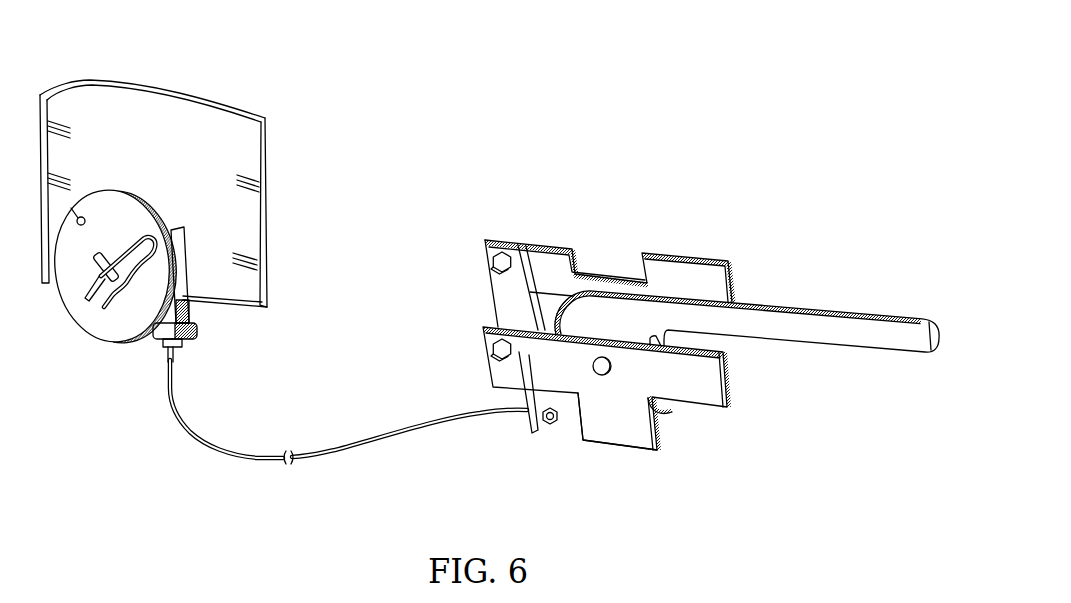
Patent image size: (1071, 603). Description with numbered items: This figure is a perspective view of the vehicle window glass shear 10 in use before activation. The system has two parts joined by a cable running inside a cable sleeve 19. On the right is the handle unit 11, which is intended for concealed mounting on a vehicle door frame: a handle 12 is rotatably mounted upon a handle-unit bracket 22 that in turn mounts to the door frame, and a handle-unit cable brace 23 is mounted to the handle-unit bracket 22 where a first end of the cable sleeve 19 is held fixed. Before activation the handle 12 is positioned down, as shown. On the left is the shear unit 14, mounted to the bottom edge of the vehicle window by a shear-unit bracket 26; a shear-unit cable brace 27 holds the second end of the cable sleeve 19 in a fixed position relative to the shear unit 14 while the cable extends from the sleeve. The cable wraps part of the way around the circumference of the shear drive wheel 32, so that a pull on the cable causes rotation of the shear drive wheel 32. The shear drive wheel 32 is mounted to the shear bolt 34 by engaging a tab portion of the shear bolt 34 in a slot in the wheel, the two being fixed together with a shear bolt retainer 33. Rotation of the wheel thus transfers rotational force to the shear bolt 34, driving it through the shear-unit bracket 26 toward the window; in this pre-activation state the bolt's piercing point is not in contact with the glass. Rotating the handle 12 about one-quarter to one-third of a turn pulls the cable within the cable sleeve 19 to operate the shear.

The vehicle window glass shear 10 is at (82, 43).
The handle unit 11 is at (567, 163).
The handle 12 is at (843, 317).
The shear unit 14 is at (82, 365).
The cable sleeve 19 is at (375, 446).
The handle-unit bracket 22 is at (548, 233).
The handle-unit cable brace 23 is at (527, 428).
The shear-unit bracket 26 is at (189, 313).
The shear-unit cable brace 27 is at (187, 341).
The shear drive wheel 32 is at (70, 308).
The shear bolt retainer 33 is at (148, 254).
The shear bolt 34 is at (103, 253).